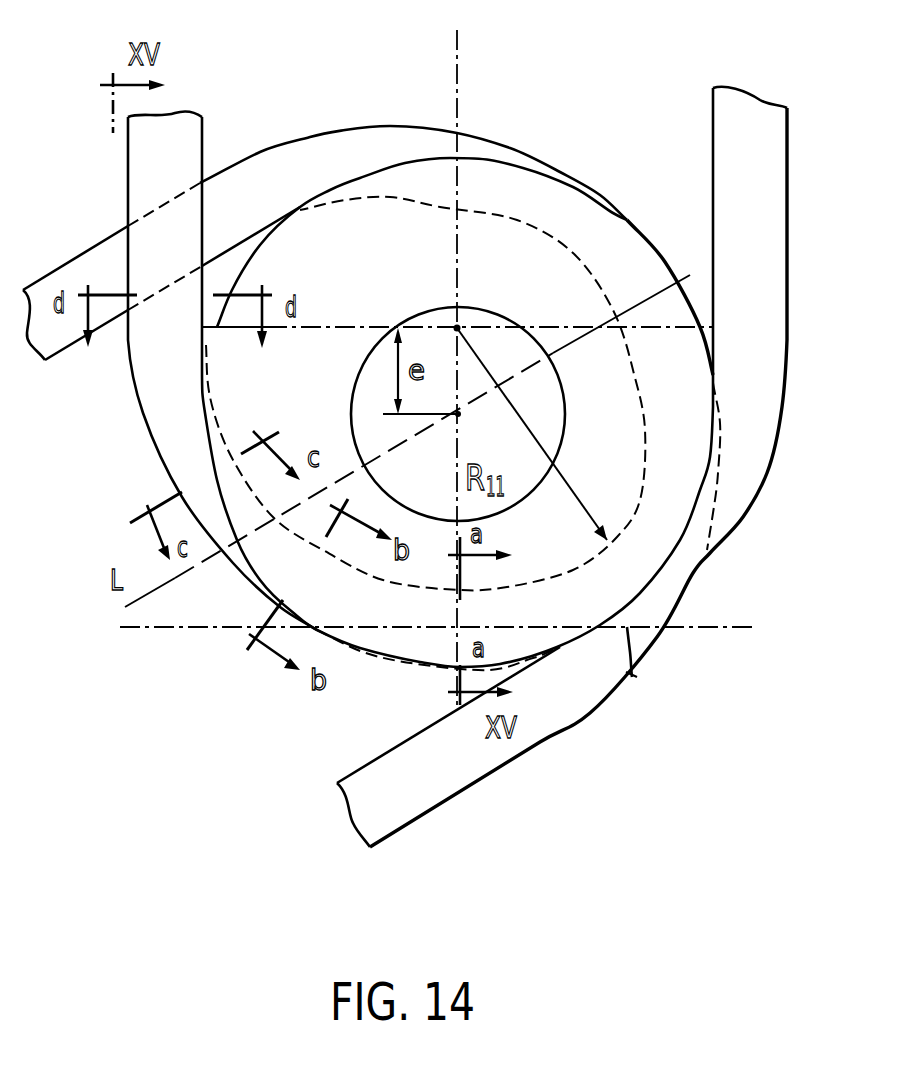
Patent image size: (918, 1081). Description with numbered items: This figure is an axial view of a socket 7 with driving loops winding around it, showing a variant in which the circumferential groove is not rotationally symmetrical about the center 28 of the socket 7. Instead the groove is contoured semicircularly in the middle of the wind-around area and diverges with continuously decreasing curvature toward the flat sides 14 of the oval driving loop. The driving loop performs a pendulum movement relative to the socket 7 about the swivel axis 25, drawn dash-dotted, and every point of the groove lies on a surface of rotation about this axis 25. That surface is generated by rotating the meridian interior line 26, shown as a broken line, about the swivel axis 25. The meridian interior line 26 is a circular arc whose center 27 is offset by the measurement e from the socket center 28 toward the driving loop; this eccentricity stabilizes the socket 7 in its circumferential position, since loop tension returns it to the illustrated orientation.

The socket 7 is at (637, 222).
The flat sides of the oval of the driving loop 14 is at (813, 322).
The swivel axis 25 is at (637, 683).
The meridian interior line 26 is at (682, 476).
The center of the meridian interior line 27 is at (457, 328).
The center of the socket 28 is at (458, 415).